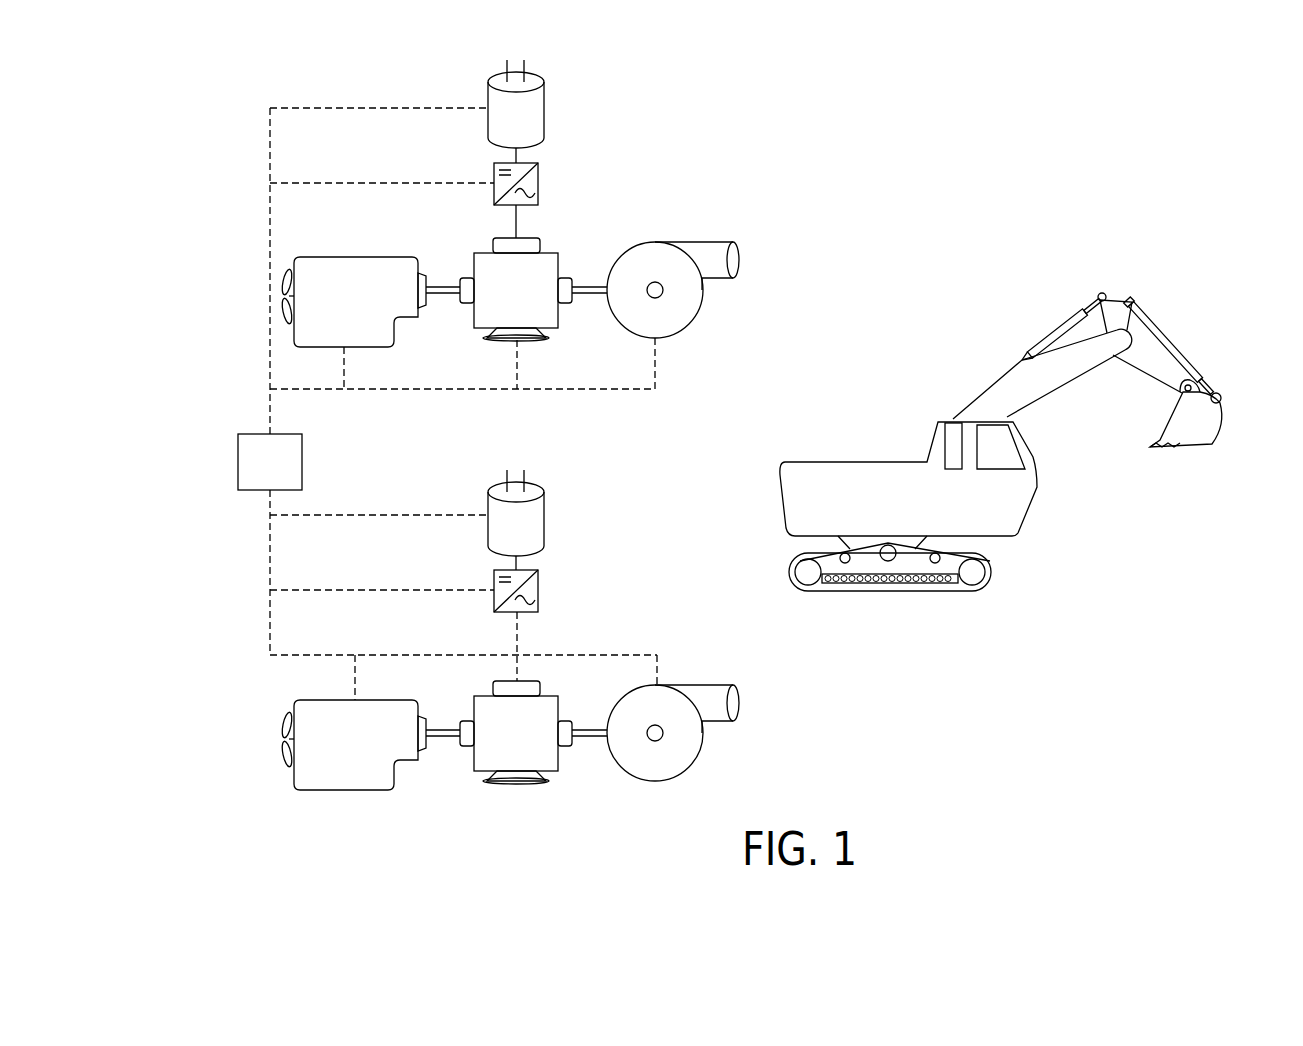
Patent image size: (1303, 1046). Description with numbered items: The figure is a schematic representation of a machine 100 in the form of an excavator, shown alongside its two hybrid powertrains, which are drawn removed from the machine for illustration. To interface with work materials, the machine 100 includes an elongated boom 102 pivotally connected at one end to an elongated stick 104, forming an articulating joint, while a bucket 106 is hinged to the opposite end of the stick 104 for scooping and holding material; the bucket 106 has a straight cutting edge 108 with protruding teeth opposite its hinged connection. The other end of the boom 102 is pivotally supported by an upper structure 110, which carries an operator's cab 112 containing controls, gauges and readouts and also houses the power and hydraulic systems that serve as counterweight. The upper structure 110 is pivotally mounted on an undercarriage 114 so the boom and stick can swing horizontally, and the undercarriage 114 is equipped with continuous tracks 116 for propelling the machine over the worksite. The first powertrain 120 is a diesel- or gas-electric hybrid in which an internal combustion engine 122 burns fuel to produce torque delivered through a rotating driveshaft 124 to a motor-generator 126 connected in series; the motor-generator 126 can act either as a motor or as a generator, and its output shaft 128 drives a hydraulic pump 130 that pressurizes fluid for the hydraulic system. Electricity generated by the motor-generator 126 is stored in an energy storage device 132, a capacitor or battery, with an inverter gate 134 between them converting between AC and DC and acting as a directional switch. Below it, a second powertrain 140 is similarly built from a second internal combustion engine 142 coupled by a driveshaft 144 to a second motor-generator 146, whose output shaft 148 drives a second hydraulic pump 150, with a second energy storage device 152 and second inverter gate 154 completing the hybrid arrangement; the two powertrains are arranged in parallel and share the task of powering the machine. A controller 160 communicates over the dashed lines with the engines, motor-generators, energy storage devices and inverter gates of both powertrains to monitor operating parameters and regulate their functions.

The machine 100 is at (945, 340).
The boom 102 is at (1018, 378).
The stick 104 is at (1135, 335).
The bucket 106 is at (1187, 435).
The cutting edge 108 is at (1150, 445).
The upper structure 110 is at (875, 468).
The operator's cab 112 is at (967, 428).
The undercarriage 114 is at (895, 567).
The continuous tracks 116 is at (841, 598).
The powertrain 120 is at (660, 403).
The internal combustion engine 122 is at (352, 265).
The driveshaft 124 is at (445, 283).
The motor-generator 126 is at (548, 268).
The output shaft 128 is at (598, 298).
The hydraulic pump 130 is at (660, 255).
The energy storage device 132 is at (545, 112).
The inverter gate 134 is at (540, 188).
The second powertrain 140 is at (670, 807).
The second internal combustion engine 142 is at (353, 724).
The driveshaft 144 is at (450, 711).
The second motor-generator 146 is at (554, 721).
The output shaft 148 is at (582, 767).
The second hydraulic pump 150 is at (694, 708).
The energy storage device 152 is at (540, 520).
The second inverter gate 154 is at (537, 588).
The controller 160 is at (255, 434).